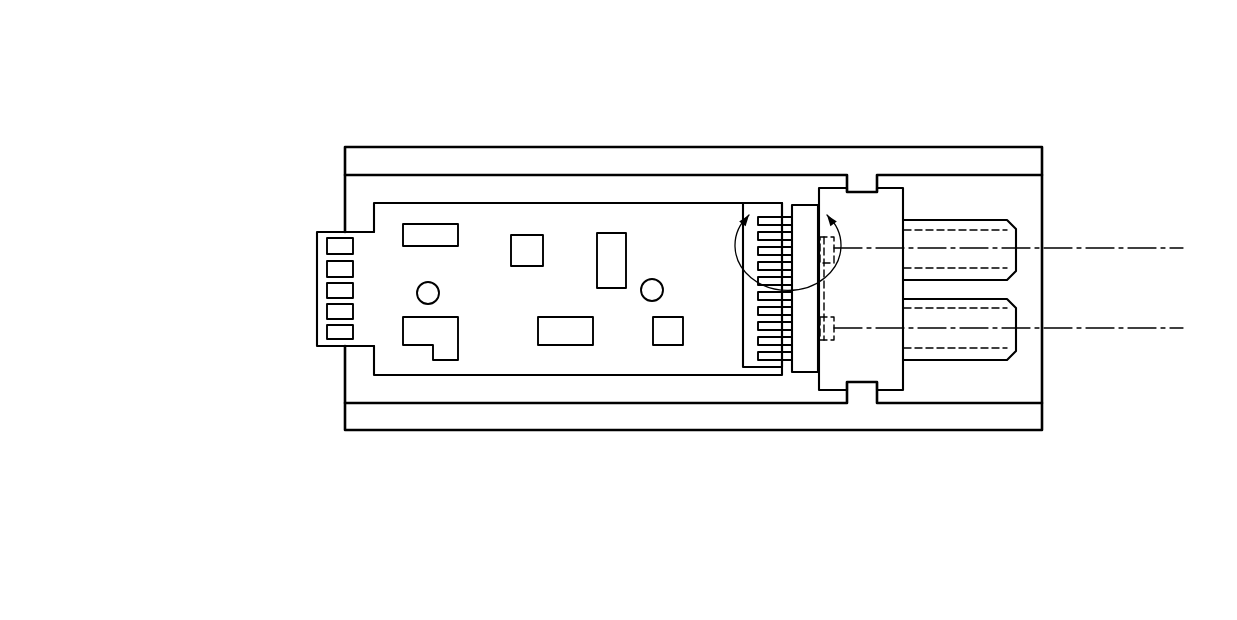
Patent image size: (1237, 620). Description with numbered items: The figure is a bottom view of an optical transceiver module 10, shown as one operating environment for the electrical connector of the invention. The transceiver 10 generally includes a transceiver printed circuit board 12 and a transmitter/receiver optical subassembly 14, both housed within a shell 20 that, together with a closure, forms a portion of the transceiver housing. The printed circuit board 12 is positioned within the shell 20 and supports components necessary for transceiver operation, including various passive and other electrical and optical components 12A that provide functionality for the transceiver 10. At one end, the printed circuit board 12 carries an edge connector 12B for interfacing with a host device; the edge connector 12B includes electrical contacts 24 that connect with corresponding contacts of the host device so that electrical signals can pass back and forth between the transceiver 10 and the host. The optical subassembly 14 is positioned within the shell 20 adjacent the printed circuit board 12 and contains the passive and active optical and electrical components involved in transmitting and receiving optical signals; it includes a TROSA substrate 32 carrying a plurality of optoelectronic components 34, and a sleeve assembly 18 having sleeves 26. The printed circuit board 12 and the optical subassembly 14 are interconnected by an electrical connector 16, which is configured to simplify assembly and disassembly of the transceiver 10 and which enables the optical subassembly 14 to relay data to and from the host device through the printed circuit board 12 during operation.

The optical transceiver module 10 is at (1100, 83).
The transceiver printed circuit board 12 is at (670, 260).
The electrical and optical components 12A is at (428, 226).
The edge connector 12B is at (316, 240).
The transmitter/receiver optical subassembly 14 is at (826, 162).
The electrical connector 16 is at (742, 202).
The sleeve assembly 18 is at (893, 190).
The shell 20 is at (406, 433).
The electrical contacts 24 is at (333, 333).
The sleeves 26 is at (990, 300).
The TROSA substrate 32 is at (807, 373).
The optoelectronic components 34 is at (834, 265).